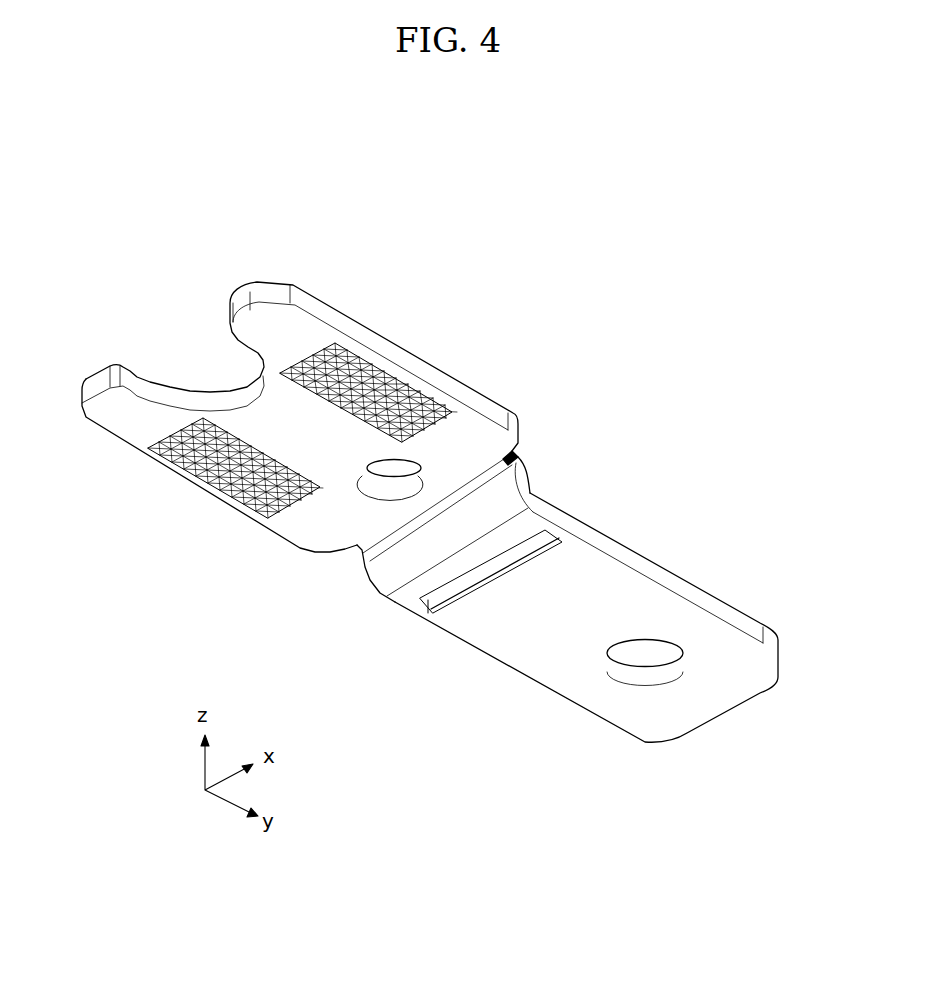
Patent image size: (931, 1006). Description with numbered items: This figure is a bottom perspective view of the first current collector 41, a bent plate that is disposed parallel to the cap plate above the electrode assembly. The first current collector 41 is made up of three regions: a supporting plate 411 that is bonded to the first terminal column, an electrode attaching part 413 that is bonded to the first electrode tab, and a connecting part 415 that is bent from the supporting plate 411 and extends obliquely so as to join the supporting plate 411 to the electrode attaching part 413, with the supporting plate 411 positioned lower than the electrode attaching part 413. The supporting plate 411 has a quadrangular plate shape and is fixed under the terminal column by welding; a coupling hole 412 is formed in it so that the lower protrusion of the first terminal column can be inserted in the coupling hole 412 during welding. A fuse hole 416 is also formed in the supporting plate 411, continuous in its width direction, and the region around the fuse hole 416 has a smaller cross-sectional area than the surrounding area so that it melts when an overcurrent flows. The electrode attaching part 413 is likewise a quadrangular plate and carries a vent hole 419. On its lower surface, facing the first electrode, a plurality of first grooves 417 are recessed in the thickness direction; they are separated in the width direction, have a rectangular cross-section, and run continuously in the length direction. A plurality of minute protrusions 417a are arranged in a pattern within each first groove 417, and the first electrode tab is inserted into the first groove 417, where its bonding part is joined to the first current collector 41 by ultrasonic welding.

The first current collector 41 is at (726, 585).
The supporting plate 411 is at (613, 588).
The coupling hole 412 is at (640, 673).
The electrode attaching part 413 is at (293, 327).
The connecting part 415 is at (522, 456).
The fuse hole 416 is at (467, 586).
The first groove 417 is at (453, 428).
The minute protrusions 417a is at (397, 373).
The vent hole 419 is at (380, 483).